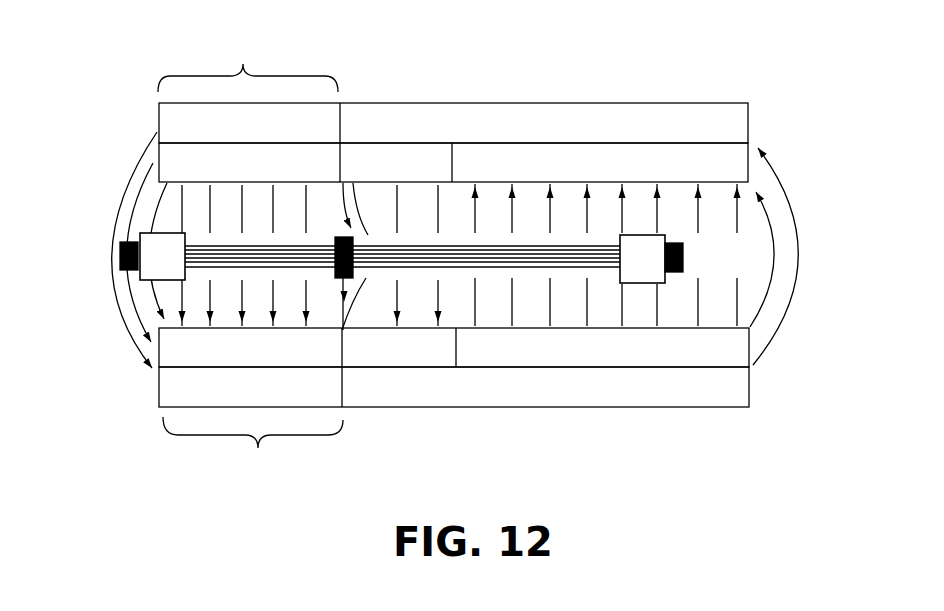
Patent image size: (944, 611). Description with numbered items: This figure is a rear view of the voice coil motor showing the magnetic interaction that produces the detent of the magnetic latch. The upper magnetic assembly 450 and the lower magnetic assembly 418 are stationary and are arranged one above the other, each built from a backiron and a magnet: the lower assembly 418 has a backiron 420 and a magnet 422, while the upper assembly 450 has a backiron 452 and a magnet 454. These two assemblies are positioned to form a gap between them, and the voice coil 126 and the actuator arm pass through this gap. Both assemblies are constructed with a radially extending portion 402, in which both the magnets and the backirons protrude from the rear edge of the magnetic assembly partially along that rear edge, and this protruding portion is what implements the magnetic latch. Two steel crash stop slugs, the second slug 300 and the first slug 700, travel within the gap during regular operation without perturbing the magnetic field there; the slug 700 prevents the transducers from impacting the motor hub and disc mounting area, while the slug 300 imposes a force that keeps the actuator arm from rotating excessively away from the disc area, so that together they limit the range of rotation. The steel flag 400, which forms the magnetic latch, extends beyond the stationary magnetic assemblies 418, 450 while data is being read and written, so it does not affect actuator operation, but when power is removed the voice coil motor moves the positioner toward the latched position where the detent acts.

The voice coil 126 is at (418, 243).
The second iron slug 300 is at (123, 242).
The magnetic latch 400 is at (345, 280).
The radially extending portion 402 is at (250, 261).
The lower magnetic assembly 418 is at (533, 409).
The backiron 420 is at (680, 390).
The magnet 422 is at (512, 348).
The upper magnetic assembly 450 is at (522, 114).
The backiron 452 is at (625, 120).
The magnet 454 is at (532, 152).
The first slug 700 is at (668, 245).